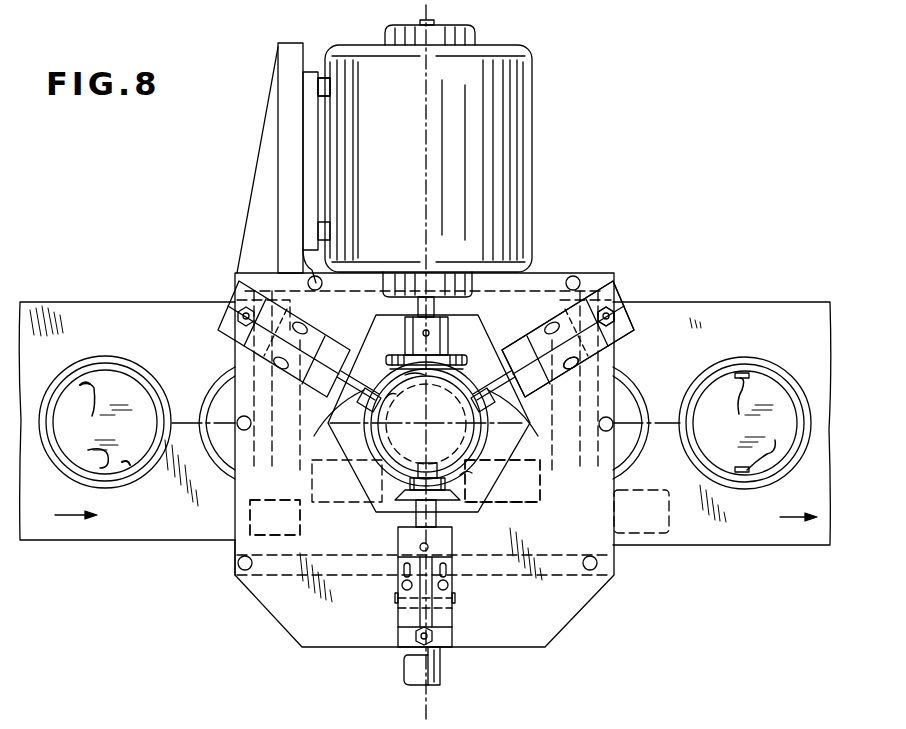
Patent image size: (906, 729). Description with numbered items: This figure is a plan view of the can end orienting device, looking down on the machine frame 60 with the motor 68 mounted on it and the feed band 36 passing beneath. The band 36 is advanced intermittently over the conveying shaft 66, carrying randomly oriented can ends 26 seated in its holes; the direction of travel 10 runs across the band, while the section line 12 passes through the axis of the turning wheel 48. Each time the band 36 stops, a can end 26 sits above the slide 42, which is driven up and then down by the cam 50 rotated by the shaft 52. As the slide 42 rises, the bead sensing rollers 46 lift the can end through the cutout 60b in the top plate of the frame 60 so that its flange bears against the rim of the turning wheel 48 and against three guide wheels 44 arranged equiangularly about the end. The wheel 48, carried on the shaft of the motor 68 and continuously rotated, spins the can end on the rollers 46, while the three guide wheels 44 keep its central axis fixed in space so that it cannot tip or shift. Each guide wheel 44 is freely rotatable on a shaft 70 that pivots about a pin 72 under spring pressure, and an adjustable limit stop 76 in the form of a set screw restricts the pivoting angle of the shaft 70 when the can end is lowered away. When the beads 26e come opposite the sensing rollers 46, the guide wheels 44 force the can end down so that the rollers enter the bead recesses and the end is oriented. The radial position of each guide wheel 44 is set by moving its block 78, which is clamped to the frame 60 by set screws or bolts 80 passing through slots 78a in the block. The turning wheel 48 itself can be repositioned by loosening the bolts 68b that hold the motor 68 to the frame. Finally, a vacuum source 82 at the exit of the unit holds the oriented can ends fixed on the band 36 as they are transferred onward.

The direction of travel 10 is at (188, 400).
The direction arrow 12 is at (400, 11).
The can end 26 is at (212, 463).
The beads 26e is at (508, 484).
The feed band 36 is at (90, 545).
The slide 42 is at (538, 462).
The guide wheels 44 is at (380, 362).
The bead sensing rollers 46 is at (429, 413).
The turning wheel 48 is at (424, 333).
The cam 50 is at (538, 505).
The shaft 52 is at (442, 664).
The machine frame 60 is at (284, 190).
The cutout 60b is at (418, 512).
The conveying shaft 66 is at (245, 545).
The motor 68 is at (520, 166).
The bolts 68b is at (332, 88).
The shaft 70 is at (501, 352).
The pin 72 is at (556, 306).
The adjustable limit stop 76 is at (616, 306).
The block 78 is at (627, 331).
The slots 78a is at (436, 366).
The set screws or bolts 80 is at (567, 380).
The vacuum source 82 is at (668, 522).